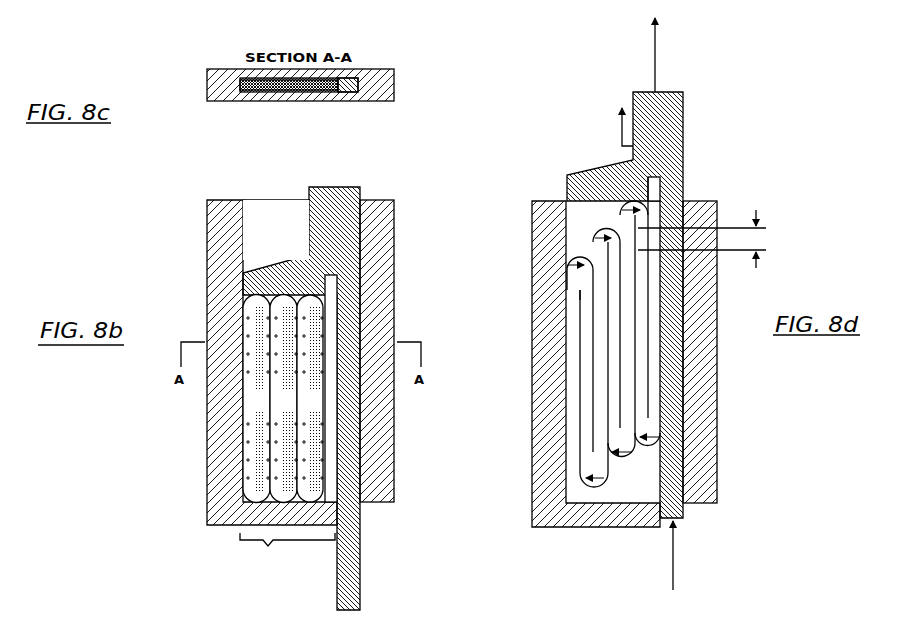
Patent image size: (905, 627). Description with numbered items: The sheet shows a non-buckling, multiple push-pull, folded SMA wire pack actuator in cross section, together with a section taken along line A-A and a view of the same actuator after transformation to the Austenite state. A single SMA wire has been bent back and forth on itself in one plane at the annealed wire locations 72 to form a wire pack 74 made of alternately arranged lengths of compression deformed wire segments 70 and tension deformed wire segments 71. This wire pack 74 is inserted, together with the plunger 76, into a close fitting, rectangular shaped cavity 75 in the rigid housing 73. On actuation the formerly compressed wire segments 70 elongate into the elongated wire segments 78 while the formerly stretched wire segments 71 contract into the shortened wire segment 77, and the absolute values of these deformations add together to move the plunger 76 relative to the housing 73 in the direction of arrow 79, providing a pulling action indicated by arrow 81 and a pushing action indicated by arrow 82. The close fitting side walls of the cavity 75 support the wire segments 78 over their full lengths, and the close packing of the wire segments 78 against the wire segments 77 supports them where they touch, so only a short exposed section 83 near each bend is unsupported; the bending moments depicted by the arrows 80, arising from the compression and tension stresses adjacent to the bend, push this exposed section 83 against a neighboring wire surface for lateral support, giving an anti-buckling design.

In FIG. 8c, the compressed wire segments 70 is at (253, 91).
In FIG. 8b, the compressed wire segments 70 is at (250, 336).
In FIG. 8c, the stretched wire segments 71 is at (263, 92).
In FIG. 8b, the stretched wire segments 71 is at (252, 372).
In FIG. 8b, the annealed wire locations 72 is at (258, 306).
In FIG. 8c, the rigid housing 73 is at (228, 73).
In FIG. 8b, the rigid housing 73 is at (224, 247).
In FIG. 8d, the rigid housing 73 is at (542, 233).
In FIG. 8b, the wire pack 74 is at (287, 549).
In FIG. 8b, the cavity 75 is at (288, 222).
In FIG. 8c, the plunger 76 is at (348, 80).
In FIG. 8b, the plunger 76 is at (318, 190).
In FIG. 8d, the plunger 76 is at (684, 151).
In FIG. 8d, the shortened wire segment 77 is at (597, 388).
In FIG. 8d, the elongated wire segments 78 is at (582, 353).
In FIG. 8d, the arrow 79 is at (621, 141).
In FIG. 8d, the arrows 80 is at (585, 277).
In FIG. 8d, the arrow 81 is at (676, 576).
In FIG. 8d, the arrow 82 is at (660, 68).
In FIG. 8d, the exposed section 83 is at (702, 239).